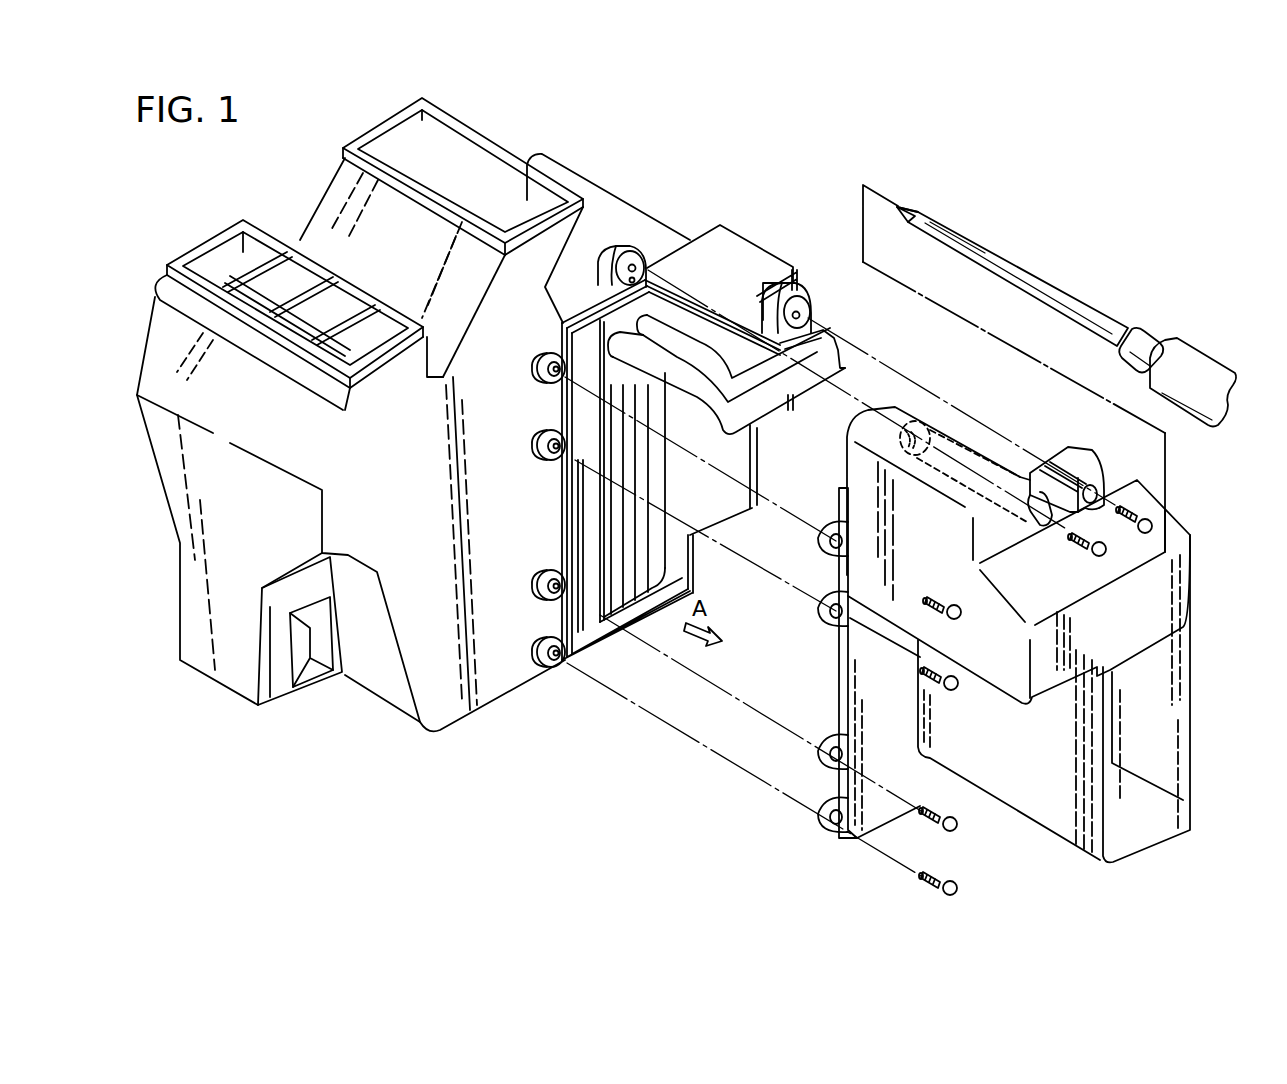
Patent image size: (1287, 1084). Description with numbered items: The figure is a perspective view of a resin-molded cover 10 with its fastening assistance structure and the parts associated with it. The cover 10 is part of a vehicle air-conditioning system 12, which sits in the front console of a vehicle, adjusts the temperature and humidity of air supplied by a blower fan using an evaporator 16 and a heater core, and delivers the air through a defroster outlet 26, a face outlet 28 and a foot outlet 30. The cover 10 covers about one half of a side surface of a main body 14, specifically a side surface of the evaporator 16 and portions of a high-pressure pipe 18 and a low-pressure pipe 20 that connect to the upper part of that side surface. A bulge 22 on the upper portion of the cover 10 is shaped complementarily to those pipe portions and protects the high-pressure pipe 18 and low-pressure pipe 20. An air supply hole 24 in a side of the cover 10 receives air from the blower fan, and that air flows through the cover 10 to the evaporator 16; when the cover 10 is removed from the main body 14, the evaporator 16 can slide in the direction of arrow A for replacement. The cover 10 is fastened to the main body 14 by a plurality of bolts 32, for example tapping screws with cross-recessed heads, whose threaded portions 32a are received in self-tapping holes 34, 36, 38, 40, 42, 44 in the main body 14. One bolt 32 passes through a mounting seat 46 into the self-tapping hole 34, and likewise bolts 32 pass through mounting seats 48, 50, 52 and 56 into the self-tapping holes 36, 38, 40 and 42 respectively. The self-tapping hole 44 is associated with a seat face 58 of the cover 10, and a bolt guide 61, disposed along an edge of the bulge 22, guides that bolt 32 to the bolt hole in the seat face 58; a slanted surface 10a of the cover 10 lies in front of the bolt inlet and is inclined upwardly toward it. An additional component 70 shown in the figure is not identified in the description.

The resin-molded cover 10 is at (1016, 624).
The slanted surface 10a is at (1028, 600).
The vehicle air-conditioning system 12 is at (964, 171).
The main body 14 is at (568, 160).
The evaporator 16 is at (628, 632).
The high-pressure pipe 18 is at (790, 387).
The low-pressure pipe 20 is at (812, 347).
The bulge 22 is at (895, 403).
The air supply hole 24 is at (1133, 822).
The defroster outlet 26 is at (495, 133).
The face outlet 28 is at (197, 240).
The foot outlet 30 is at (308, 676).
The bolts 32 is at (1153, 528).
The threaded portion 32a is at (1128, 505).
The self-tapping hole 34 is at (537, 660).
The self-tapping hole 36 is at (792, 290).
The self-tapping hole 38 is at (537, 378).
The self-tapping hole 40 is at (537, 452).
The self-tapping hole 42 is at (537, 590).
The self-tapping hole 44 is at (636, 268).
The mounting seat 46 is at (826, 798).
The mounting seat 48 is at (1080, 478).
The mounting seat 50 is at (826, 522).
The mounting seat 52 is at (826, 592).
The mounting seat 56 is at (826, 735).
The seat face 58 is at (930, 418).
The bolt guide 61 is at (990, 445).
The screwdriver 70 is at (1108, 326).